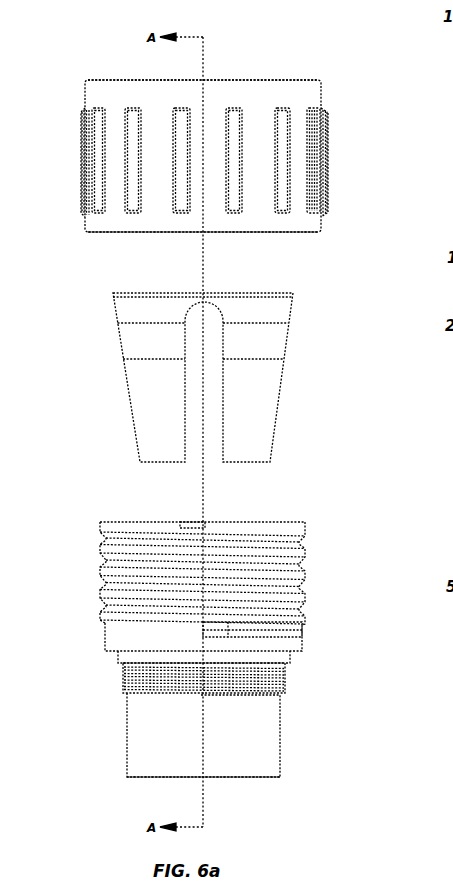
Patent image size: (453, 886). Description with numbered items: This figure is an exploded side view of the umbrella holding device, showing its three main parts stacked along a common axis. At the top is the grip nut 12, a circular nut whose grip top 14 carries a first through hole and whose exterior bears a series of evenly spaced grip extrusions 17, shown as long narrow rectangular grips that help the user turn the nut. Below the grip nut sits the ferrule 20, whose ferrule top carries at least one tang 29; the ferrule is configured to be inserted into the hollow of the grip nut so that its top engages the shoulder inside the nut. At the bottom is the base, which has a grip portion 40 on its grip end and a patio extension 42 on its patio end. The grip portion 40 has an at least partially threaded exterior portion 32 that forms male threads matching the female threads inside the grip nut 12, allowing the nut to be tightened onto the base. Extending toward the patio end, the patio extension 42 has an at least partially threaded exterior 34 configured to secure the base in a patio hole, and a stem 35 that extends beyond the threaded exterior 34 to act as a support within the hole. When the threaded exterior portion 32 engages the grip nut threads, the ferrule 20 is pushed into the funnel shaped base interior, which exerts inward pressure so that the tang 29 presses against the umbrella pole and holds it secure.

The grip nut 12 is at (334, 86).
The grip top 14 is at (243, 80).
The grip extrusion 17 is at (280, 172).
The ferrule 20 is at (118, 233).
The tang 29 is at (250, 417).
The grip portion 40 is at (240, 575).
The at least partially threaded exterior portion 32 is at (282, 540).
The at least partially threaded exterior 34 is at (245, 680).
The stem 35 is at (238, 746).
The patio extension 42 is at (177, 776).